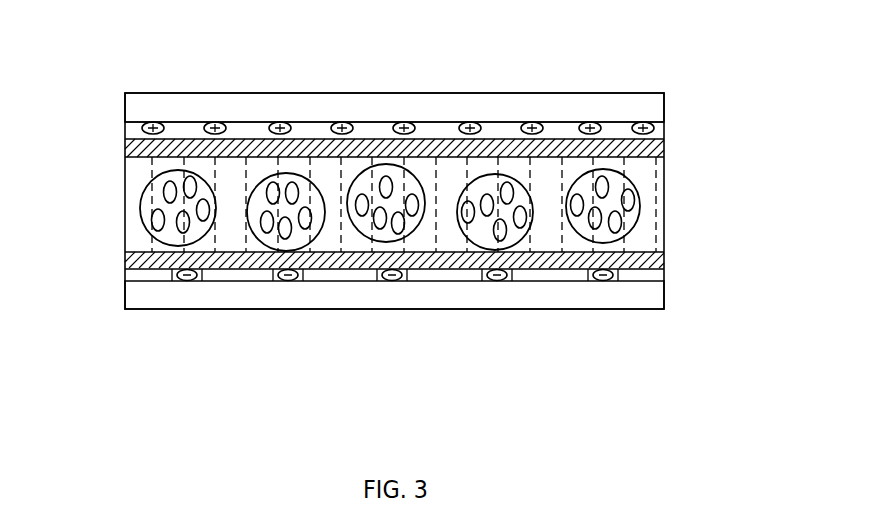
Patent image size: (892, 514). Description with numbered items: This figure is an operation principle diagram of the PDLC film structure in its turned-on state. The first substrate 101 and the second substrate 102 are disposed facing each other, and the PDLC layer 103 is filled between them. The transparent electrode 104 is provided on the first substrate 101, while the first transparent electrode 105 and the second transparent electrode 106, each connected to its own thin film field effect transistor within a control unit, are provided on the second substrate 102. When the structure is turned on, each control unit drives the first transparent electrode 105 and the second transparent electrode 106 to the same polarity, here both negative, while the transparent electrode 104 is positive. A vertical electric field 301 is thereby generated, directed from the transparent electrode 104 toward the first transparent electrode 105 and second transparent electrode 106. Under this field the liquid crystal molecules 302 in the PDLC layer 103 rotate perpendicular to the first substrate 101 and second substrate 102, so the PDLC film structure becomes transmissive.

The first substrate 101 is at (640, 107).
The second substrate 102 is at (645, 293).
The PDLC layer 103 is at (336, 257).
The transparent electrode 104 is at (645, 123).
The first transparent electrode 105 is at (602, 283).
The second transparent electrode 106 is at (490, 283).
The vertical electric field 301 is at (652, 185).
The liquid crystal molecules 302 is at (153, 218).